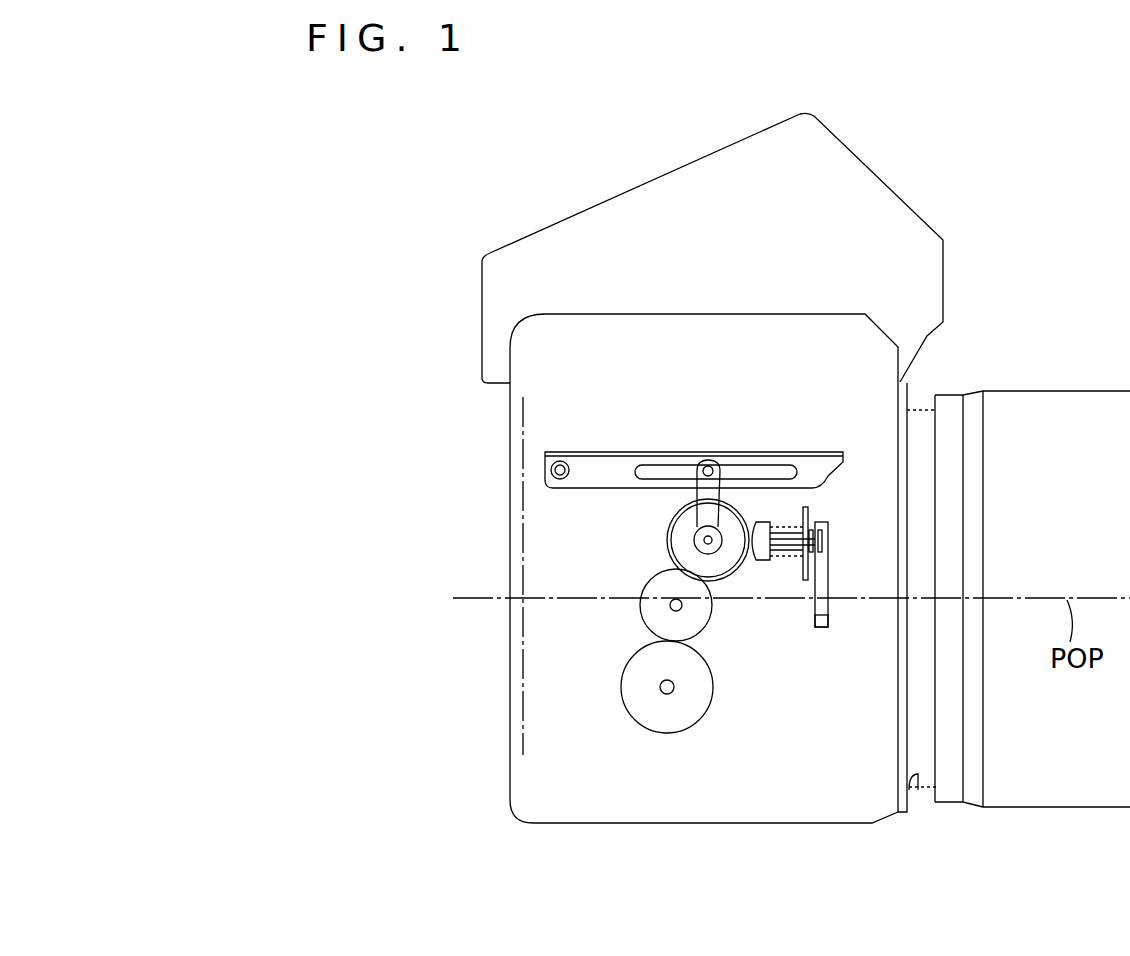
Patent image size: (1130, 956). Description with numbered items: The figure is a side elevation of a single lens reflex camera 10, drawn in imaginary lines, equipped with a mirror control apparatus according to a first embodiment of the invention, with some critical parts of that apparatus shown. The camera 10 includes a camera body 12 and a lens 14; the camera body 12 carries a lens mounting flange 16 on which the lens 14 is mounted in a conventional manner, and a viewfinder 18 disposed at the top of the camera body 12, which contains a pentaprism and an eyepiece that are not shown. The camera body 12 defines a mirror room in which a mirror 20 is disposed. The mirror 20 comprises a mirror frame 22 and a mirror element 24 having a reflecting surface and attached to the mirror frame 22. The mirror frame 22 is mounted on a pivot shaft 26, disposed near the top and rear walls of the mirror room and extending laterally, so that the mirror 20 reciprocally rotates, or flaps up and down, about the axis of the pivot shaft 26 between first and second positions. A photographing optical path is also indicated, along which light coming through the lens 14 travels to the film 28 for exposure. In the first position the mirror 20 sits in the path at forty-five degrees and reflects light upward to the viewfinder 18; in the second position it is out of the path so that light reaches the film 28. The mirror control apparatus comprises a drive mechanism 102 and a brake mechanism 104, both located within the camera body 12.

The single lens reflex camera 10 is at (1047, 262).
The camera body 12 is at (605, 825).
The lens 14 is at (1030, 810).
The lens mounting flange 16 is at (920, 778).
The viewfinder 18 is at (923, 220).
The mirror 20 is at (718, 450).
The mirror frame 22 is at (813, 477).
The mirror element 24 is at (660, 452).
The pivot shaft 26 is at (558, 460).
The film 28 is at (525, 735).
The drive mechanism 102 is at (620, 633).
The brake mechanism 104 is at (772, 573).